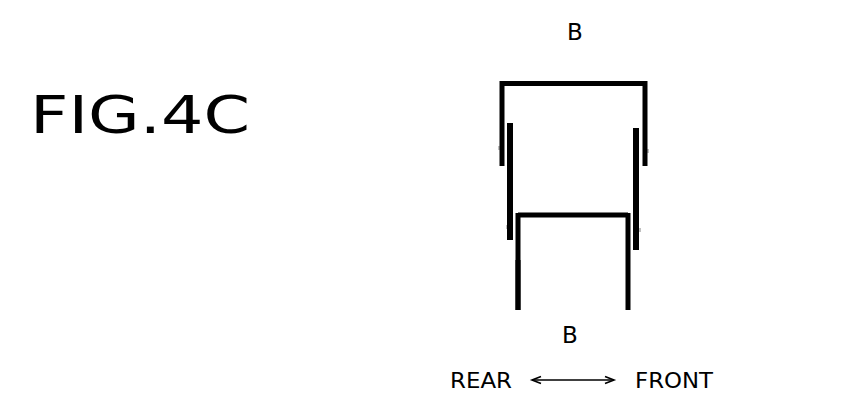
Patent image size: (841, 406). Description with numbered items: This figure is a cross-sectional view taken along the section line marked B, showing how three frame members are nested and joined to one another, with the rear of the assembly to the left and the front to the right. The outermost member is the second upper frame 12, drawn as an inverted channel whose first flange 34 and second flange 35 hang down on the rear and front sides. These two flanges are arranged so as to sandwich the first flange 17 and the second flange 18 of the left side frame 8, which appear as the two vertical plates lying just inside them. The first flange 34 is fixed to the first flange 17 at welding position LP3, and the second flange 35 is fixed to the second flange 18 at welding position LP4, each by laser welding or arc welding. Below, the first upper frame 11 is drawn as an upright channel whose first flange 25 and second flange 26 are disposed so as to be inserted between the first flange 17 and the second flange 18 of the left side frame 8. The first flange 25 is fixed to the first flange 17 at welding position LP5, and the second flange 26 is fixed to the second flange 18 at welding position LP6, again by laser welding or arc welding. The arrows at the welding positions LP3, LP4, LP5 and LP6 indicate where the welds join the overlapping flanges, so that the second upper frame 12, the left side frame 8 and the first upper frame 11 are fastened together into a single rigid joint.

The second upper frame 12 is at (499, 85).
The first flange 34 is at (499, 113).
The second flange 35 is at (647, 100).
The left side frame 8 is at (507, 182).
The first flange 17 is at (507, 210).
The second flange 18 is at (640, 198).
The first upper frame 11 is at (516, 268).
The first flange 25 is at (516, 297).
The second flange 26 is at (630, 275).
The welding position LP3 is at (499, 148).
The welding position LP4 is at (648, 151).
The welding position LP5 is at (507, 227).
The welding position LP6 is at (640, 230).